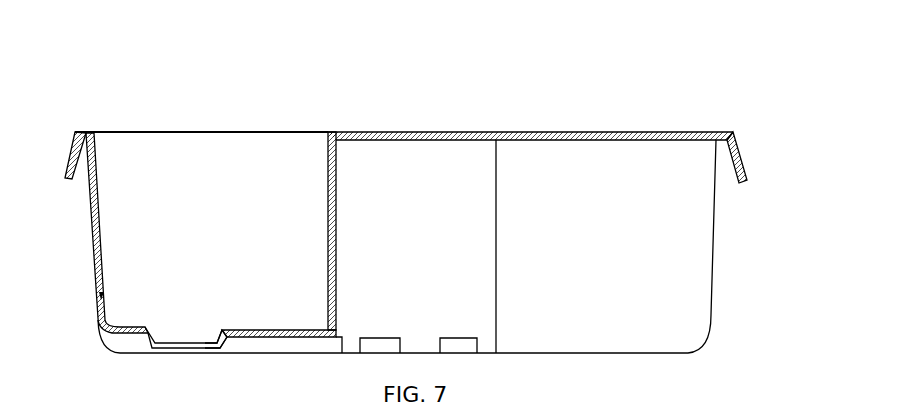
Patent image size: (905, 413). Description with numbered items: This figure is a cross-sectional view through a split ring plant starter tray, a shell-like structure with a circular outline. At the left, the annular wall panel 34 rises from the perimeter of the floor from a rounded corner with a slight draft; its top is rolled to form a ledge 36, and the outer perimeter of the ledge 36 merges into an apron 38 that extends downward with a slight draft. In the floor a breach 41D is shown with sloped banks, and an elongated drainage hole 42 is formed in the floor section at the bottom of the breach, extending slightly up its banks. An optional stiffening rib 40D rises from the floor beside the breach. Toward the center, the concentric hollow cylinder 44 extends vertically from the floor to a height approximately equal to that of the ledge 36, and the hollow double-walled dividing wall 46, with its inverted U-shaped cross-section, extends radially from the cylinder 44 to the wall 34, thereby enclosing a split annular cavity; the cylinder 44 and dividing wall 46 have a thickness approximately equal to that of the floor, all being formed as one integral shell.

The ledge 36 is at (88, 132).
The wall panel 34 is at (93, 231).
The breach 41D is at (176, 334).
The drainage hole 42 is at (197, 341).
The stiffening rib 40D is at (256, 330).
The concentric hollow cylinder 44 is at (437, 148).
The dividing wall 46 is at (594, 135).
The apron 38 is at (740, 150).